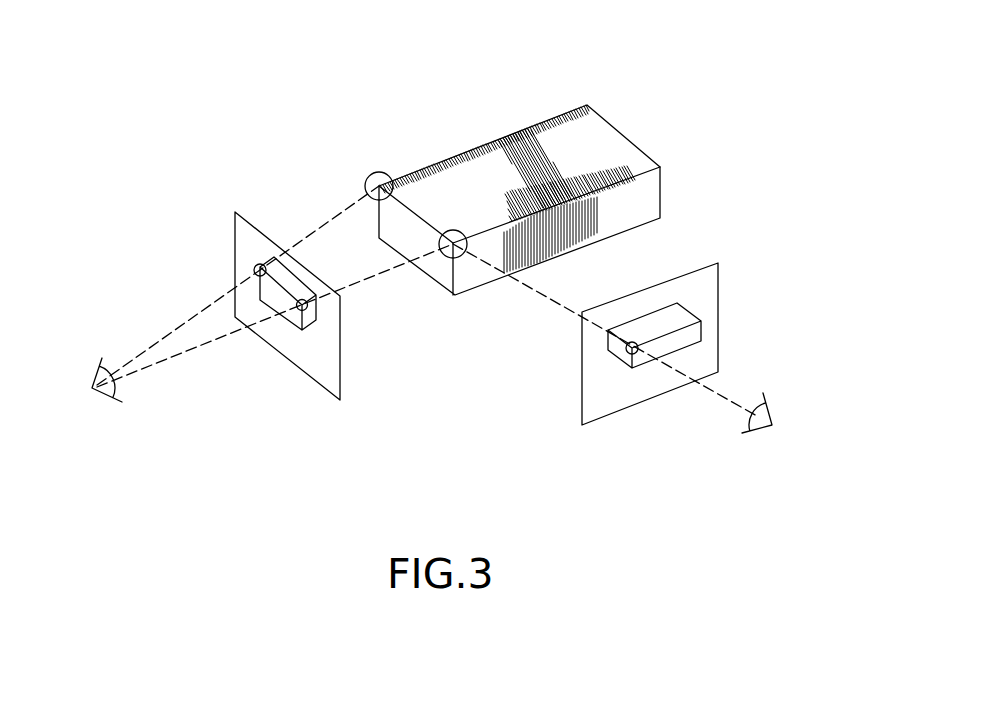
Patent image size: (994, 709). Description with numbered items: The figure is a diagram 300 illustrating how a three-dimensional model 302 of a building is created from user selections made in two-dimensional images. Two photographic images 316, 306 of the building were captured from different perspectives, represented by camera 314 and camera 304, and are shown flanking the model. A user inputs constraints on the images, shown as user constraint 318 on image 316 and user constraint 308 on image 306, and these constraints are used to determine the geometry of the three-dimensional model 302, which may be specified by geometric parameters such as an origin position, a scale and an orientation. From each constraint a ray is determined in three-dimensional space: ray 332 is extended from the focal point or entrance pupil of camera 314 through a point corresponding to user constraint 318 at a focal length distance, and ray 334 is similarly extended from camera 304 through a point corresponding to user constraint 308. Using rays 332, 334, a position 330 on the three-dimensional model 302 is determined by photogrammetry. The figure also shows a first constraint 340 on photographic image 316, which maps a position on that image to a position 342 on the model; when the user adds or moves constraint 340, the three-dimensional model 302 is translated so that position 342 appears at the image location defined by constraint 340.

The diagram 300 is at (716, 39).
The three-dimensional model 302 is at (503, 137).
The camera 304 is at (772, 425).
The photographic image 306 is at (718, 290).
The user constraint 308 is at (627, 353).
The camera 314 is at (92, 388).
The photographic image 316 is at (235, 222).
The user constraint 318 is at (308, 307).
The position 330 is at (455, 231).
The ray 332 is at (200, 347).
The ray 334 is at (548, 302).
The first constraint 340 is at (260, 263).
The position 342 is at (378, 172).